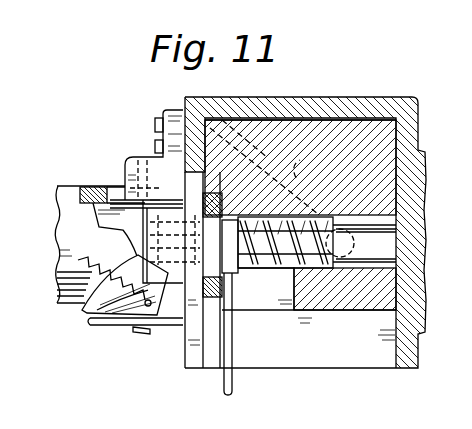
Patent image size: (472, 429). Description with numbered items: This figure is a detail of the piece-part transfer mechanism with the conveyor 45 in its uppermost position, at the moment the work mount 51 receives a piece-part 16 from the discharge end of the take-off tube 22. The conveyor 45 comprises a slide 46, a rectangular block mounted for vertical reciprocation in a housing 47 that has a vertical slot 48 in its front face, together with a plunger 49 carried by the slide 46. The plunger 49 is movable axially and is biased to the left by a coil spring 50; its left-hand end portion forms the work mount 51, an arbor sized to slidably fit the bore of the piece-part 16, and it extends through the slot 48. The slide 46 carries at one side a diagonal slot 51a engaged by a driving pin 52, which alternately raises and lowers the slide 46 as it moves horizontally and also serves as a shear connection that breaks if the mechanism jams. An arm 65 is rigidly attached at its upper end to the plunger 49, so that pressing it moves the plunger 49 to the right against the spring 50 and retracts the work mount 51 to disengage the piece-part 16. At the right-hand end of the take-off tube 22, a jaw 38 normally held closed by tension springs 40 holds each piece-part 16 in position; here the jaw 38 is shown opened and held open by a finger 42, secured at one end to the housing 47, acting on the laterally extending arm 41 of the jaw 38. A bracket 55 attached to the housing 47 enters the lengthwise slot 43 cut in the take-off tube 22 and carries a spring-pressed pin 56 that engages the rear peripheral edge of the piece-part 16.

The housing 47 is at (333, 104).
The diagonal slot 51a is at (290, 166).
The plunger 49 is at (329, 216).
The conveyor 45 is at (293, 318).
The driving pin 52 is at (355, 226).
The slide 46 is at (353, 302).
The coil spring 50 is at (279, 270).
The arm 65 is at (233, 382).
The vertical slot 48 is at (188, 360).
The work mount 51 is at (210, 292).
The bracket 55 is at (156, 132).
The piece-part 16 is at (166, 213).
The lengthwise extending slot 43 is at (117, 184).
The take-off tube 22 is at (57, 205).
The spring-pressed pin 56 is at (136, 208).
The tension springs 40 is at (92, 256).
The jaw 38 is at (83, 317).
The finger 42 is at (92, 326).
The laterally extending arm 41 is at (157, 330).